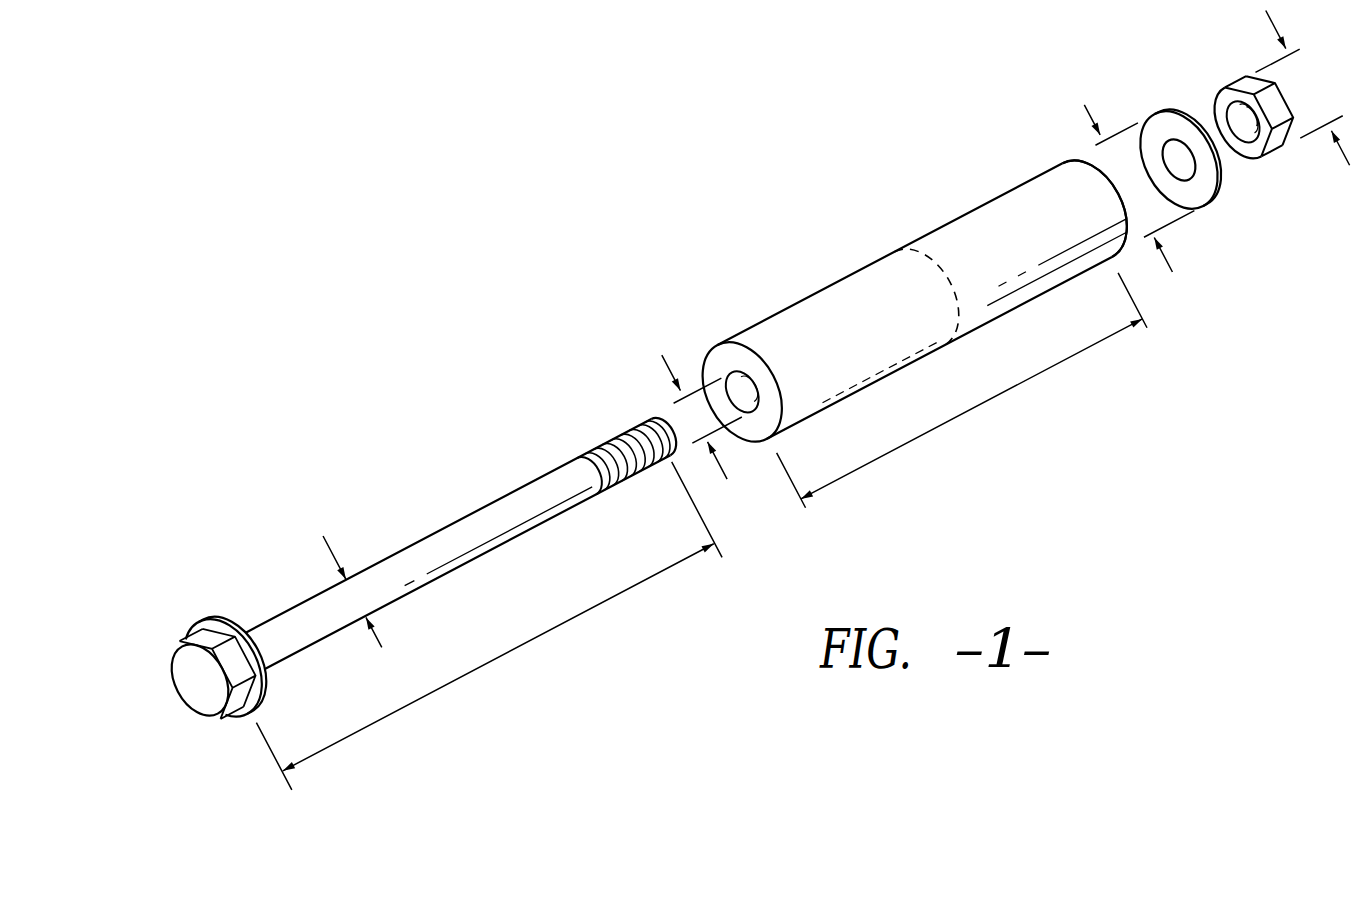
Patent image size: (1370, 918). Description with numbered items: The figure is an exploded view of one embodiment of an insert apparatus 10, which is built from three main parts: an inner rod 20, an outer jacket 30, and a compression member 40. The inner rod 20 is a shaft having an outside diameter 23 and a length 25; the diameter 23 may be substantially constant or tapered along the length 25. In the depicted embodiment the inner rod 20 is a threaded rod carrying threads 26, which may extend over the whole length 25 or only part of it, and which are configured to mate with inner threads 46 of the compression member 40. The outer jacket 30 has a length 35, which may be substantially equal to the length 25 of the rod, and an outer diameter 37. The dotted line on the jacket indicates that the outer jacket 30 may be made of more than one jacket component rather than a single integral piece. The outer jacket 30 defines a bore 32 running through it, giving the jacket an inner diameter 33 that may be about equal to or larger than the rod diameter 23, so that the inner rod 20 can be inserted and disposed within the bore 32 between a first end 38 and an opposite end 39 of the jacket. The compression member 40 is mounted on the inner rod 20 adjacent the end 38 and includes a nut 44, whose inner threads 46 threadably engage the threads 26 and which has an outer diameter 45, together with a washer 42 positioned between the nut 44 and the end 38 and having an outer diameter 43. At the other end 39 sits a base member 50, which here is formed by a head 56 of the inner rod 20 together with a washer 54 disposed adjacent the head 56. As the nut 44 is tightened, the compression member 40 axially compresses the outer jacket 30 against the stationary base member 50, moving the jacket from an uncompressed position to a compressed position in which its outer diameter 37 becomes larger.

The insert apparatus 10 is at (458, 145).
The inner rod 20 is at (468, 488).
The outside diameter 23 is at (333, 548).
The length 25 is at (532, 642).
The threads 26 is at (610, 440).
The outer jacket 30 is at (812, 264).
The bore 32 is at (730, 387).
The inner diameter 33 is at (664, 366).
The length 35 is at (1007, 392).
The outer diameter 37 is at (880, 234).
The end 38 is at (1075, 158).
The end 39 is at (724, 357).
The compression member 40 is at (1156, 50).
The washer 42 is at (1203, 204).
The outer diameter 43 is at (1087, 108).
The nut 44 is at (1280, 157).
The outer diameter 45 is at (1262, 20).
The inner threads 46 is at (1250, 135).
The base member 50 is at (194, 580).
The washer 54 is at (240, 722).
The head 56 is at (202, 692).